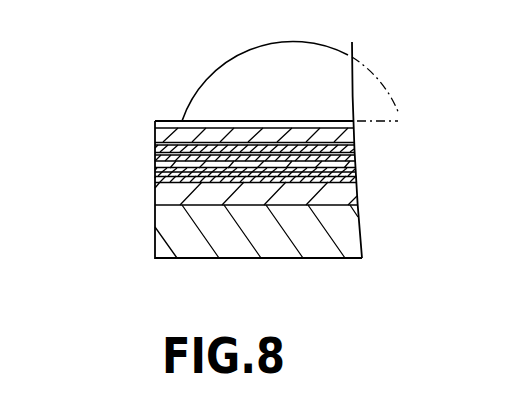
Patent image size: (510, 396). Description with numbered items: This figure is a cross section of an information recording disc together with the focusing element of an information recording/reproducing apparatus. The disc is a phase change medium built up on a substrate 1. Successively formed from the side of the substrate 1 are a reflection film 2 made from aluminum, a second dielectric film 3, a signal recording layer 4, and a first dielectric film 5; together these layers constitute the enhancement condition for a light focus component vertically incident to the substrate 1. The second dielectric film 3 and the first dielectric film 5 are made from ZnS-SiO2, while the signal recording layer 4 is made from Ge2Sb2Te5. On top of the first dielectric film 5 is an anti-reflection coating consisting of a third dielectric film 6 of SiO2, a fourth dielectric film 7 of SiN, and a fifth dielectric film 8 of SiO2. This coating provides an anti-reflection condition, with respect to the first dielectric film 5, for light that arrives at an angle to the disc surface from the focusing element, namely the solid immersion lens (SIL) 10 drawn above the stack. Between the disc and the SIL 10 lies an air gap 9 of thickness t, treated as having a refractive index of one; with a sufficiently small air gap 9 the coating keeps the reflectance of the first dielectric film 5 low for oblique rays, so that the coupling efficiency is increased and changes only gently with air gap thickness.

The substrate 1 is at (170, 235).
The reflection film 2 is at (170, 199).
The second dielectric film 3 is at (155, 183).
The signal recording layer 4 is at (155, 173).
The first dielectric film 5 is at (155, 164).
The third dielectric film 6 is at (155, 150).
The fourth dielectric film 7 is at (155, 143).
The fifth dielectric film 8 is at (155, 135).
The air gap 9 is at (155, 125).
The solid immersion lens (SIL) 10 is at (200, 105).